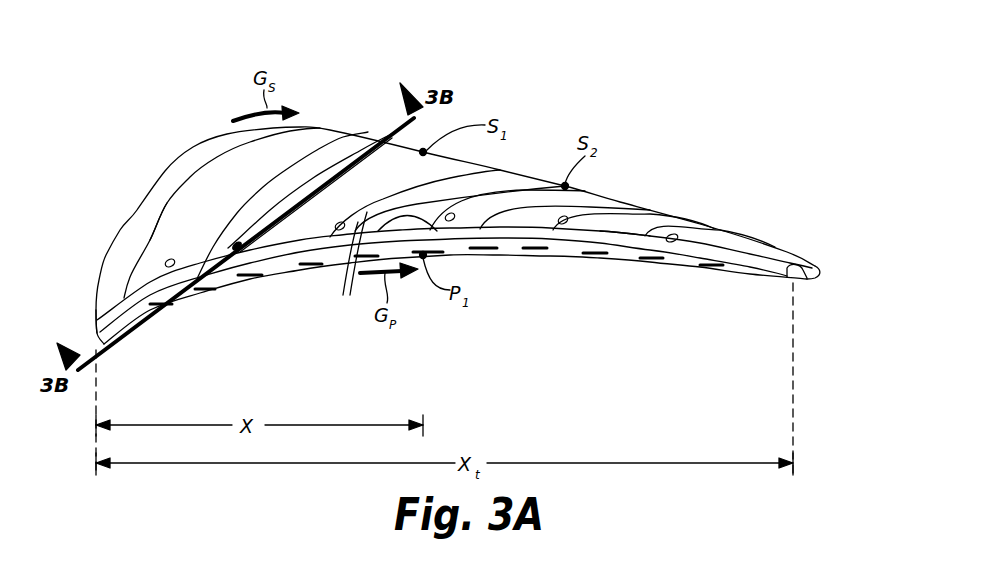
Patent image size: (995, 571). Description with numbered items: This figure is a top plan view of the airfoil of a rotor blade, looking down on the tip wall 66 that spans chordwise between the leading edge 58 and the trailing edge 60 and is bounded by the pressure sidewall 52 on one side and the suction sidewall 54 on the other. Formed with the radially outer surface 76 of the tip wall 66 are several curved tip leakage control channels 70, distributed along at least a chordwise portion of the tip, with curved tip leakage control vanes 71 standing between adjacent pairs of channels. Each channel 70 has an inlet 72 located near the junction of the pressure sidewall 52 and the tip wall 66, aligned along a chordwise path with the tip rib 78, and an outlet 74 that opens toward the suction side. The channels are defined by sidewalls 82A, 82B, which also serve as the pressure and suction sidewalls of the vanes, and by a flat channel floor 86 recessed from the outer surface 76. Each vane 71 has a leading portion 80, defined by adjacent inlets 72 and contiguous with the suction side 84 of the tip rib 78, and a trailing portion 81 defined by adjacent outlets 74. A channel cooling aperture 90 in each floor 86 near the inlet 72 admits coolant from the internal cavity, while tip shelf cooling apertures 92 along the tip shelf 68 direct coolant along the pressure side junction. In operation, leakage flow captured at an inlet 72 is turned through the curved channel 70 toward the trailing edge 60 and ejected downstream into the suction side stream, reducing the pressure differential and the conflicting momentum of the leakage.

The pressure sidewall 52 is at (497, 290).
The suction sidewall 54 is at (356, 120).
The leading edge 58 is at (100, 343).
The trailing edge 60 is at (823, 273).
The tip wall 66 is at (812, 170).
The tip shelf 68 is at (688, 268).
The tip leakage control channel 70 is at (231, 163).
The tip leakage control vane 71 is at (220, 254).
The control channel inlet 72 is at (347, 264).
The control channel outlet 74 is at (530, 192).
The tip outer surface 76 is at (150, 224).
The tip rib 78 is at (333, 249).
The control vane leading portion 80 is at (612, 228).
The control vane trailing portion 81 is at (682, 228).
The control channel sidewall (control vane pressure sidewall) 82A is at (385, 164).
The control channel sidewall (control vane suction sidewall) 82B is at (327, 163).
The tip rib suction side 84 is at (131, 290).
The control channel floor 86 is at (211, 206).
The channel cooling aperture 90 is at (674, 235).
The tip shelf cooling aperture 92 is at (313, 267).